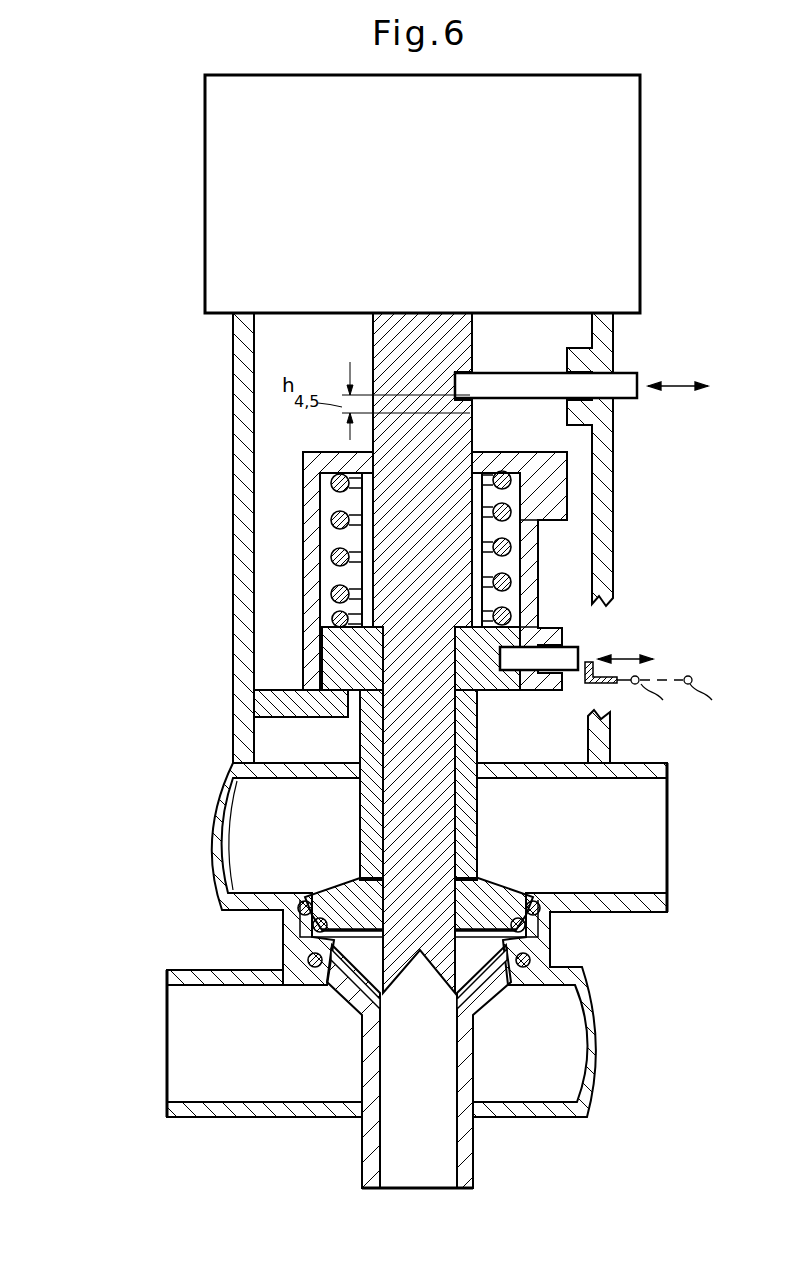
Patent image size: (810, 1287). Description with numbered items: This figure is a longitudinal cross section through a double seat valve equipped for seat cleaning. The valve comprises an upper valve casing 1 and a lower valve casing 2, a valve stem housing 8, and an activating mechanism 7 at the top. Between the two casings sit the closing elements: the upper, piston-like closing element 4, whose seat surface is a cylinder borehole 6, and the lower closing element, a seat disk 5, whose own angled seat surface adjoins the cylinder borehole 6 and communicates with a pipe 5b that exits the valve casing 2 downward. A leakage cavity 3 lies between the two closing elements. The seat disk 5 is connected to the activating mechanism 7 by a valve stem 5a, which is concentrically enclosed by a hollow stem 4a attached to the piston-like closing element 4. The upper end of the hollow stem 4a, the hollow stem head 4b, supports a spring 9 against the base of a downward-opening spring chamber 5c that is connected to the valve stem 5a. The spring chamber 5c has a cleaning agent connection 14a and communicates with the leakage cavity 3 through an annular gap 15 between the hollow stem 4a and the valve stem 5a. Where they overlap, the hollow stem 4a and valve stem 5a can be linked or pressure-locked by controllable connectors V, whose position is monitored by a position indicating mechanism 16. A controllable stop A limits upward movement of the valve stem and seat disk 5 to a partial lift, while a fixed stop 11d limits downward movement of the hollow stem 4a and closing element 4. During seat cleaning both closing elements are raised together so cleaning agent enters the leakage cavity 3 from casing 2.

The valve casing 1 is at (606, 841).
The valve casing 2 is at (246, 1067).
The leakage cavity 3 is at (540, 939).
The piston-like closing element 4 is at (322, 900).
The hollow stem 4a is at (373, 837).
The hollow stem head 4b is at (327, 645).
The seat disk 5 is at (322, 948).
The valve stem 5a is at (403, 778).
The pipe 5b is at (370, 1147).
The spring chamber 5c is at (530, 549).
The cylinder borehole 6 is at (297, 922).
The activating mechanism 7 is at (640, 164).
The valve stem housing 8 is at (601, 448).
The spring 9 is at (328, 557).
The fixed stop 11d is at (332, 703).
The cleaning agent connection 14a is at (558, 487).
The annular gap 15 is at (458, 830).
The position indicating mechanism 16 is at (618, 684).
The controllable stop A is at (605, 379).
The controllable connector V is at (563, 658).